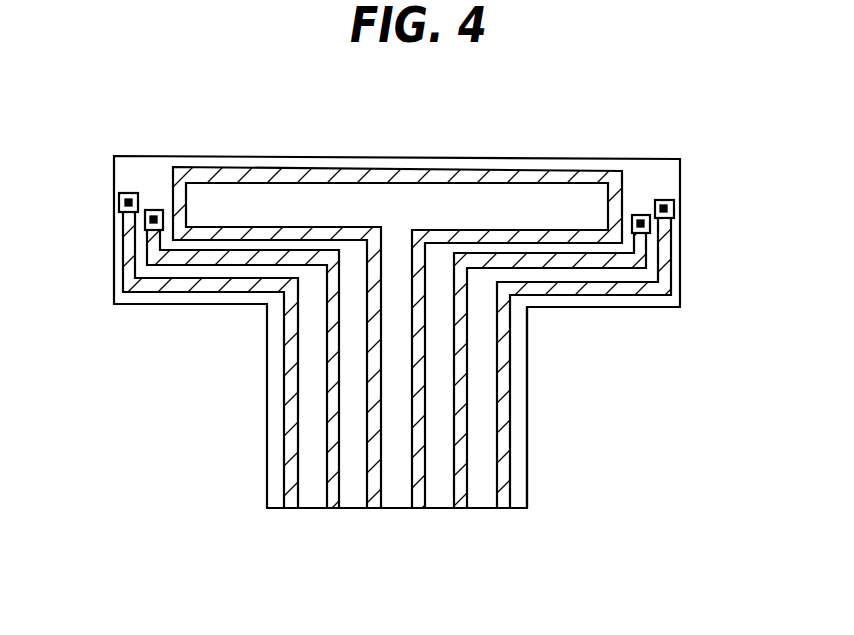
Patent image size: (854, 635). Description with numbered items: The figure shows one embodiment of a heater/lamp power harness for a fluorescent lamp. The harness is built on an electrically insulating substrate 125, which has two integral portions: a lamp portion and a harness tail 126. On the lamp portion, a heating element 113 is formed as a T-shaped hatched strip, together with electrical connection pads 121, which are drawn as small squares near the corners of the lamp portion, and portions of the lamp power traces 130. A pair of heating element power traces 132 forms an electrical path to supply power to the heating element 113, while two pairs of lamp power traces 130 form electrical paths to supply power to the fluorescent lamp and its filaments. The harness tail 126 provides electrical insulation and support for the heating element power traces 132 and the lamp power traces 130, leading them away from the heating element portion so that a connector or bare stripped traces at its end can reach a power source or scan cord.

The heating element 113 is at (298, 168).
The electrical connection pads 121 is at (152, 225).
The electrically insulating substrate 125 is at (570, 158).
The harness tail 126 is at (527, 397).
The lamp power traces 130 is at (332, 508).
The heating element power traces 132 is at (373, 508).